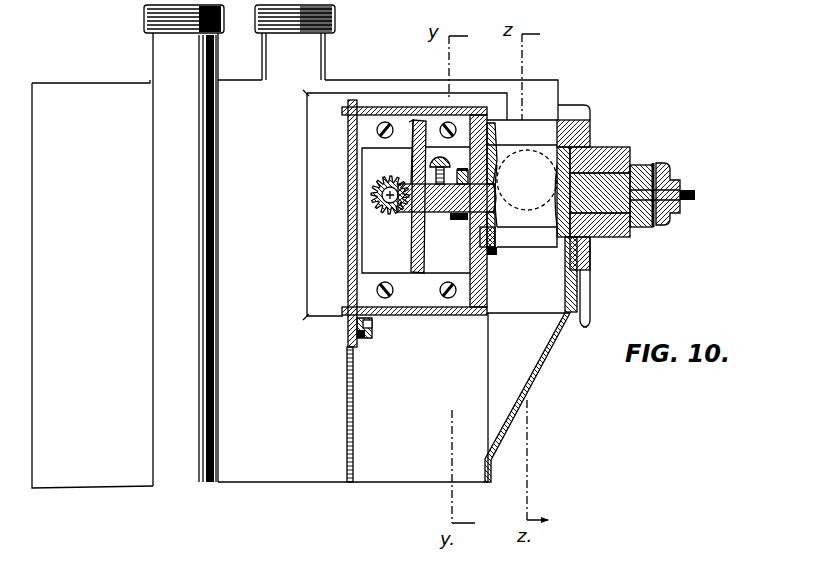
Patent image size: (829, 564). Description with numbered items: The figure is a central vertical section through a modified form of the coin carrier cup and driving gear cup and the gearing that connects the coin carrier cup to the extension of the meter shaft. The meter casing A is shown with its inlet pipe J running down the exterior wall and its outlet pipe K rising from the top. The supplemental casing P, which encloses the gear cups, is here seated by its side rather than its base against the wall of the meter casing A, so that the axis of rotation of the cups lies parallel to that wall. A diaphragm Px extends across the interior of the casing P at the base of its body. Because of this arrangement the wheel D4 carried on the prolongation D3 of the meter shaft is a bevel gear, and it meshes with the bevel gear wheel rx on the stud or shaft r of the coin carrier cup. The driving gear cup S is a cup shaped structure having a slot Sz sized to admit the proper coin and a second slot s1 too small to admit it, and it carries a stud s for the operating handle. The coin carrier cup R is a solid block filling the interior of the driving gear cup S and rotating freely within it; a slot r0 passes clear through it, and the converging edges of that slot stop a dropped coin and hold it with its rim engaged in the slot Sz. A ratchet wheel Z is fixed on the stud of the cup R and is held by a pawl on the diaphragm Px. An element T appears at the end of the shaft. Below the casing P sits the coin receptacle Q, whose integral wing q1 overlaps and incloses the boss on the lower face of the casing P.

The casing of the meter A is at (311, 284).
The inlet pipe J is at (155, 207).
The outlet pipe K is at (327, 56).
The supplemental casing P is at (327, 117).
The diaphragm Px is at (505, 133).
The prolongation of the shaft D D3 is at (367, 207).
The bevel gear wheel D4 is at (413, 210).
The bevel gear wheel rx is at (413, 153).
The stud or shaft of the coin carrier cup r is at (394, 247).
The ratchet wheel Z is at (456, 208).
The coin carrier cup R is at (495, 250).
The driving gear cup S is at (580, 143).
The stud s is at (607, 205).
The slot Sz is at (544, 153).
The slot r0 is at (526, 188).
The slot s1 is at (527, 237).
The shaft end T is at (697, 197).
The coin receptacle Q is at (444, 397).
The wing or extension q1 is at (527, 368).